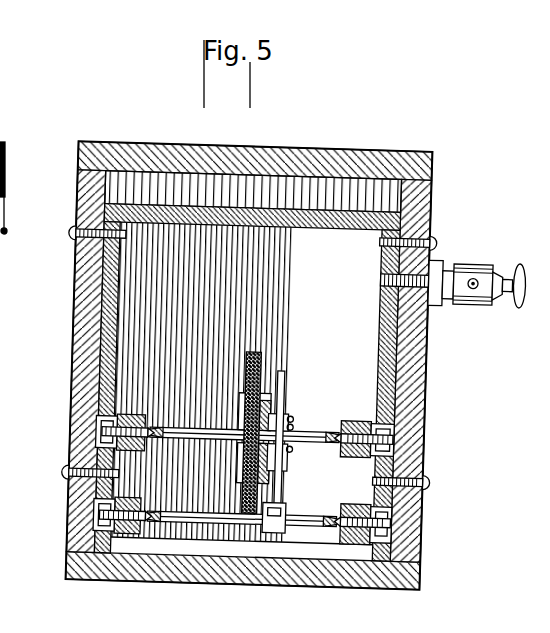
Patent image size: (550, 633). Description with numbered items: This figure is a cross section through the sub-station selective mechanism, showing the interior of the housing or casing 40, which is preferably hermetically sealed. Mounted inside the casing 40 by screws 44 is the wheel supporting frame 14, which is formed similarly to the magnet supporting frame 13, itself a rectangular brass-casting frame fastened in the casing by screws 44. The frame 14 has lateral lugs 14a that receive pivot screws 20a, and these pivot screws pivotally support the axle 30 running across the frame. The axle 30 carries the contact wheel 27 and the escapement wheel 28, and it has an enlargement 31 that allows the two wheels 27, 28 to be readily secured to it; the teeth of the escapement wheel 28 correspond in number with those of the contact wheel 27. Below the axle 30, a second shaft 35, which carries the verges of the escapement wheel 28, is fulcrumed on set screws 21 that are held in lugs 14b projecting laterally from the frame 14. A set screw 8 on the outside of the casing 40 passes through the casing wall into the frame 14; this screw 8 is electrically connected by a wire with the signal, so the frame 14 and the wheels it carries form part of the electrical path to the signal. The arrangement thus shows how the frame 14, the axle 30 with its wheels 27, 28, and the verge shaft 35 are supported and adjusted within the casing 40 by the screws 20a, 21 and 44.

The set screw 8 is at (455, 258).
The magnet supporting frame 13 is at (0, 286).
The wheel supporting frame 14 is at (348, 229).
The lateral lugs 14a is at (153, 394).
The lugs 14b is at (377, 503).
The pivot screws 20a is at (102, 430).
The set screws 21 is at (105, 527).
The contact wheel 27 is at (246, 376).
The escapement wheel 28 is at (286, 387).
The axle 30 is at (175, 432).
The enlargement 31 is at (290, 421).
The shaft 35 is at (314, 514).
The housing or casing 40 is at (249, 355).
The screws 44 is at (64, 237).